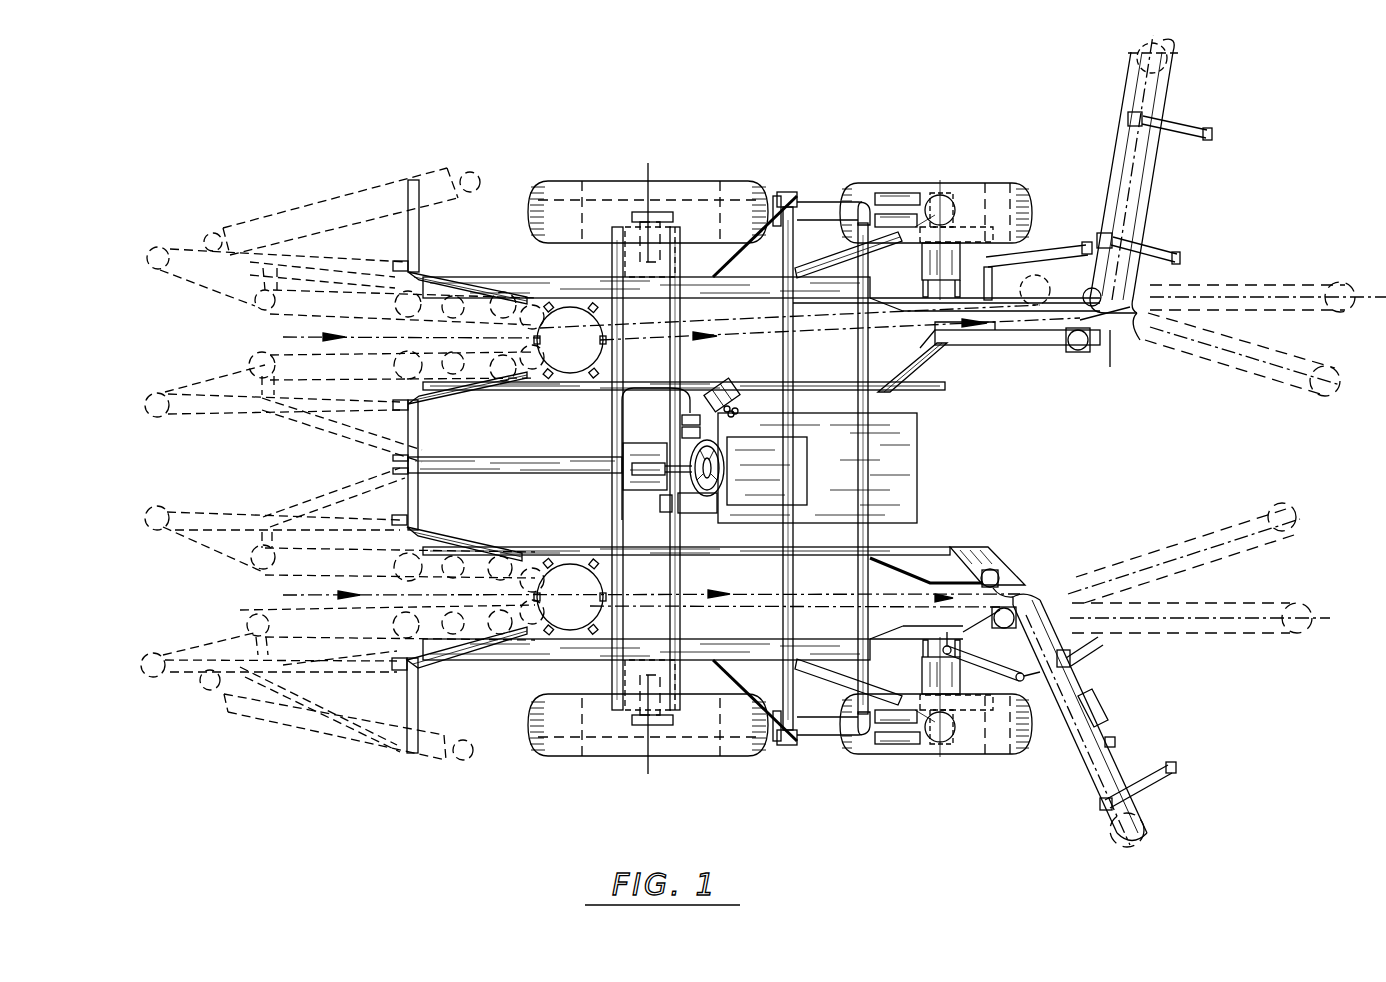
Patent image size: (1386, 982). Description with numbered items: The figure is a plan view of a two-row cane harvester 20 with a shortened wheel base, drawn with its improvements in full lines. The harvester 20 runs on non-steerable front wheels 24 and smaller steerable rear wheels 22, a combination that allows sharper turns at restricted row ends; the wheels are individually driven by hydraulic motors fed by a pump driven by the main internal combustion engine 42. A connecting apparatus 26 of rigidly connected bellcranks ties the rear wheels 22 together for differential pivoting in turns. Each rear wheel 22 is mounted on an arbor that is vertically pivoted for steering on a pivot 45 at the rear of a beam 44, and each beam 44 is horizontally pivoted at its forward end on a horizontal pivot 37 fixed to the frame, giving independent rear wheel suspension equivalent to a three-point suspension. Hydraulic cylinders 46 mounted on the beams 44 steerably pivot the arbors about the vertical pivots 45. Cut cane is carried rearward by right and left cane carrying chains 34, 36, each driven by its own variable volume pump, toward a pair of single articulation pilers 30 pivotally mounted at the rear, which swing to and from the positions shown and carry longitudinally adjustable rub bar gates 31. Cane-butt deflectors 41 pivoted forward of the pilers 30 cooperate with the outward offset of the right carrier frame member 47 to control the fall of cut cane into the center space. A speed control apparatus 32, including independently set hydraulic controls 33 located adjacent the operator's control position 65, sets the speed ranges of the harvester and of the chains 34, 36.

The harvester 20 is at (780, 193).
The steerable rear wheels 22 is at (905, 182).
The front wheels 24 is at (590, 175).
The connecting apparatus 26 is at (628, 470).
The single articulation pilers 30 is at (1180, 153).
The rub bar gates 31 is at (1130, 337).
The speed control apparatus 32 is at (722, 383).
The hydraulic controls 33 is at (1040, 250).
The right cane carrying chain 34 is at (275, 327).
The left cane carrying chain 36 is at (275, 598).
The horizontal pivots 37 is at (797, 197).
The cane-butt deflectors 41 is at (1110, 350).
The internal combustion engine 42 is at (918, 455).
The beams 44 is at (845, 205).
The vertical pivots 45 is at (950, 200).
The hydraulic cylinders 46 is at (905, 215).
The right carrier frame member 47 is at (905, 375).
The operator's control position 65 is at (795, 440).